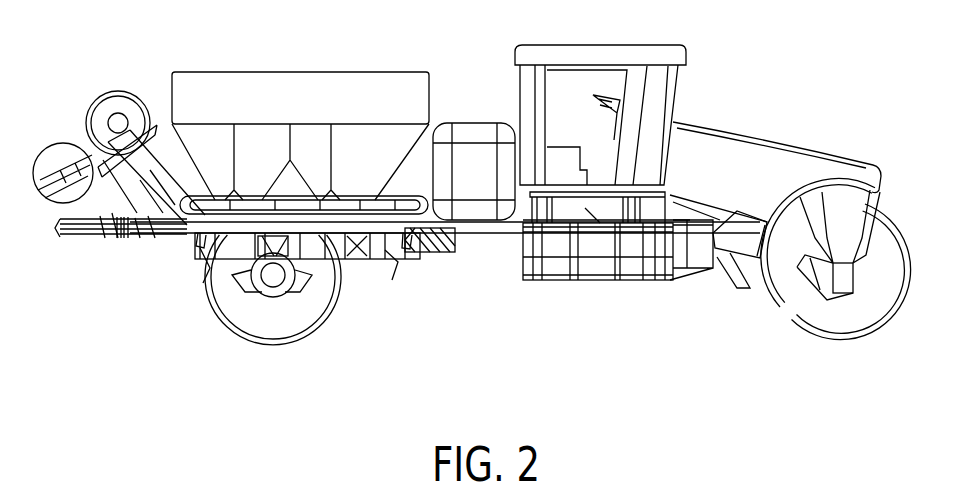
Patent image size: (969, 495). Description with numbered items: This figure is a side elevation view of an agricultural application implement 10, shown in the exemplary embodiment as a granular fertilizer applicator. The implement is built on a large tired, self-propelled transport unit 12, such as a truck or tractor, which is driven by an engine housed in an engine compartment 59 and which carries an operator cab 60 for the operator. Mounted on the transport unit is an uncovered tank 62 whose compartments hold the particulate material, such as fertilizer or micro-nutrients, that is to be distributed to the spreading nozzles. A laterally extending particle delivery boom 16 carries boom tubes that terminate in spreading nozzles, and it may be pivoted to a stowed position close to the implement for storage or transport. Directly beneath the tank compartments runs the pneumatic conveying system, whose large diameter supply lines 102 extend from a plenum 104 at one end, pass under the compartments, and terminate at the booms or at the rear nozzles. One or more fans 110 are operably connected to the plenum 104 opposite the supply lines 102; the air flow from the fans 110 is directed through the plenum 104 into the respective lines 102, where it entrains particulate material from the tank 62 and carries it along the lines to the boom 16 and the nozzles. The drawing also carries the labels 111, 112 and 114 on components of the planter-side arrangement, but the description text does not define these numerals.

The agricultural application implement 10 is at (562, 318).
The transport unit 12 is at (702, 108).
The particle delivery boom 16 is at (457, 262).
The engine compartment 59 is at (805, 138).
The operator cab 60 is at (602, 45).
The tank 62 is at (277, 55).
The supply line 102 is at (145, 238).
The plenum 104 is at (110, 238).
The fan 110 is at (47, 150).
The seed delivery tube 111 is at (374, 194).
The row unit disc 112 is at (258, 255).
The row unit bracket 114 is at (207, 250).